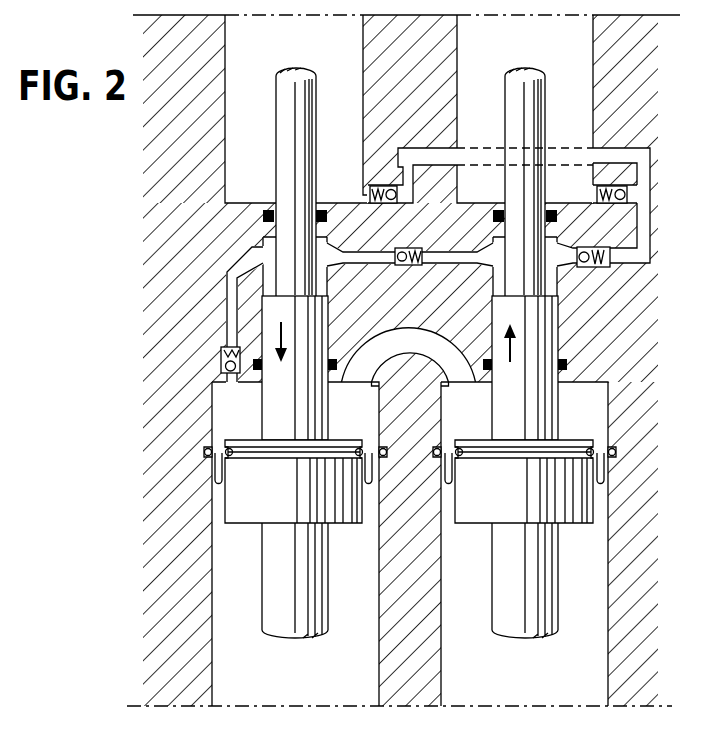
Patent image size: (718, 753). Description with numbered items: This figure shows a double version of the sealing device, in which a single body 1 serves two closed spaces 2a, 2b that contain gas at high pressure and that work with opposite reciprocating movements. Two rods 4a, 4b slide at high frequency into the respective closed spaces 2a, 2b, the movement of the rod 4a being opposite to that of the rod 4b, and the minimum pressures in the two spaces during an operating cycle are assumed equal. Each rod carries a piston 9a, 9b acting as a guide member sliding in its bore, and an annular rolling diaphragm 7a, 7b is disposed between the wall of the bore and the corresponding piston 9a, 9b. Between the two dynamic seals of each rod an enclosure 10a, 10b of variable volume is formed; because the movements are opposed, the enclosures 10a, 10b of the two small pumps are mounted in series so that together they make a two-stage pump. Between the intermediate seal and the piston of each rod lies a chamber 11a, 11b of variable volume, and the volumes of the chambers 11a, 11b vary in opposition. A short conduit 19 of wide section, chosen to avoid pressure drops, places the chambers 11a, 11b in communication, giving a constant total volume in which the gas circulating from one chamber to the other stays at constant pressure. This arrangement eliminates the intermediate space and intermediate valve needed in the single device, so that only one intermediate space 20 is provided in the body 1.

The body 1 is at (177, 595).
The closed space 2a is at (250, 48).
The closed space 2b is at (570, 76).
The rod 4a is at (283, 140).
The rod 4b is at (535, 132).
The rolling diaphragm 7a is at (357, 468).
The rolling diaphragm 7b is at (453, 457).
The piston 9a is at (240, 493).
The piston 9b is at (582, 503).
The enclosure 10a is at (267, 262).
The enclosure 10b is at (550, 275).
The chamber 11a is at (238, 402).
The chamber 11b is at (588, 417).
The short conduit 19 is at (417, 352).
The intermediate space 20 is at (642, 158).